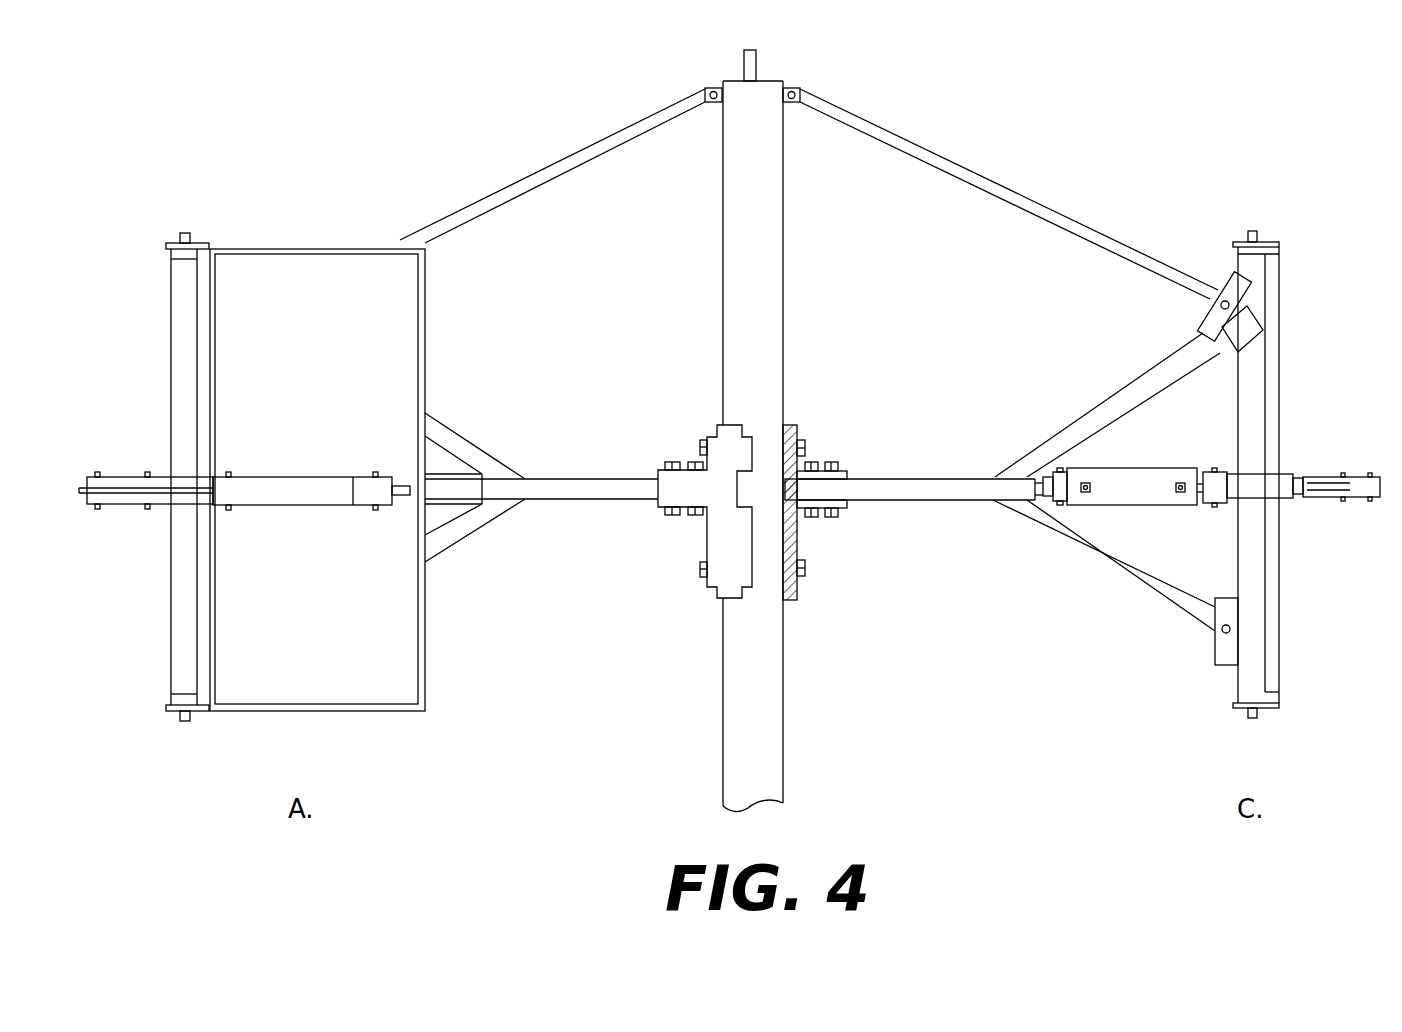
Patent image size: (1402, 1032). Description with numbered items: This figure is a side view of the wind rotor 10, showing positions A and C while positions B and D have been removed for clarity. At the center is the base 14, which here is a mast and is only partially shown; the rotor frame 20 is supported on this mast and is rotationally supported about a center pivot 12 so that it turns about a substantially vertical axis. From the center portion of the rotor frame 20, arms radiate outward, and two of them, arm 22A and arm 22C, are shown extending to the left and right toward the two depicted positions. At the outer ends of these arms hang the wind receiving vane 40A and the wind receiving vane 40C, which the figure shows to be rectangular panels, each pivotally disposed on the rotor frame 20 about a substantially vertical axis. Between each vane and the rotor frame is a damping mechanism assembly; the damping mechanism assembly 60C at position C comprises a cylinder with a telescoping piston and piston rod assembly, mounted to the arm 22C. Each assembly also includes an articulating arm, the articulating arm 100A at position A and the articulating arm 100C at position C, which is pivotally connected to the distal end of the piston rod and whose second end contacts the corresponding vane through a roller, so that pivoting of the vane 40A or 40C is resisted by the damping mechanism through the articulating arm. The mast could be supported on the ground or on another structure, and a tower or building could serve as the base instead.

The wind rotor 10 is at (500, 175).
The center pivot 12 is at (756, 62).
The base 14 is at (783, 340).
The rotor frame 20 is at (888, 479).
The arm 22A is at (576, 478).
The arm 22C is at (941, 479).
The wind receiving vane 40A is at (398, 677).
The wind receiving vane 40C is at (1273, 585).
The damping mechanism assembly 60C is at (1118, 506).
The articulating arm 100A is at (258, 506).
The articulating arm 100C is at (1356, 477).